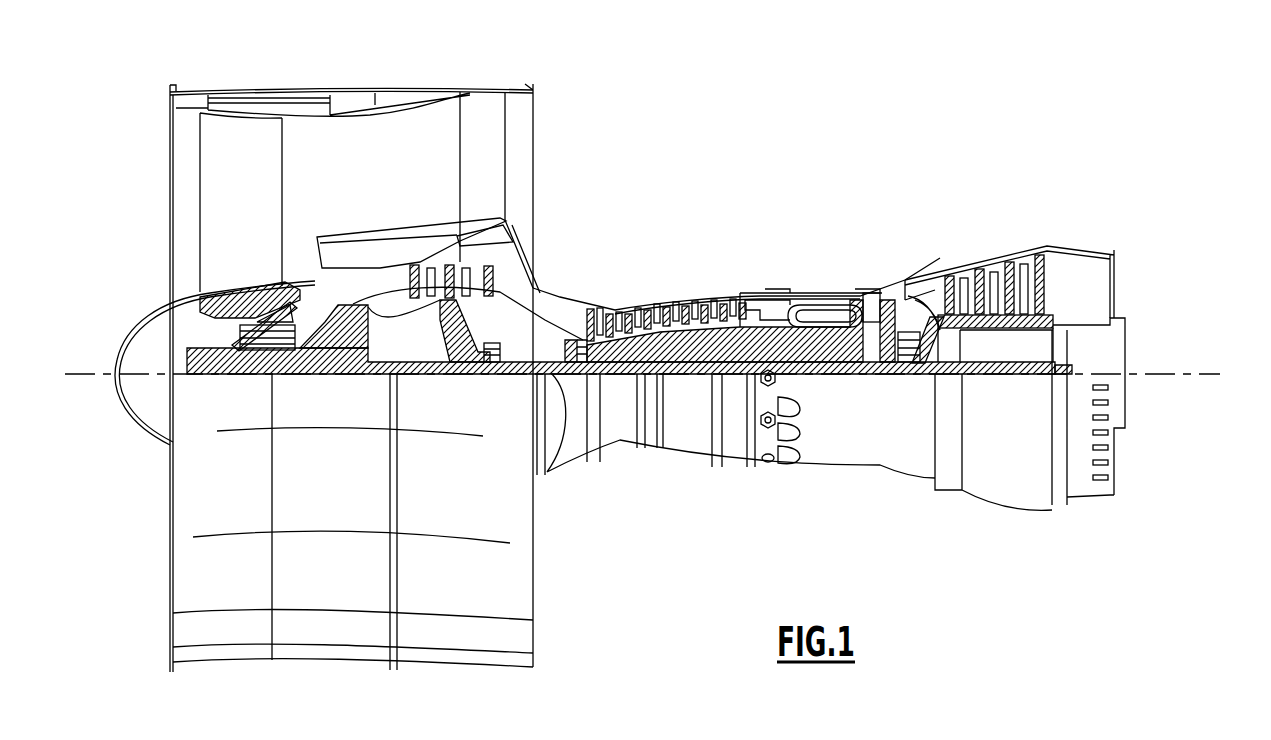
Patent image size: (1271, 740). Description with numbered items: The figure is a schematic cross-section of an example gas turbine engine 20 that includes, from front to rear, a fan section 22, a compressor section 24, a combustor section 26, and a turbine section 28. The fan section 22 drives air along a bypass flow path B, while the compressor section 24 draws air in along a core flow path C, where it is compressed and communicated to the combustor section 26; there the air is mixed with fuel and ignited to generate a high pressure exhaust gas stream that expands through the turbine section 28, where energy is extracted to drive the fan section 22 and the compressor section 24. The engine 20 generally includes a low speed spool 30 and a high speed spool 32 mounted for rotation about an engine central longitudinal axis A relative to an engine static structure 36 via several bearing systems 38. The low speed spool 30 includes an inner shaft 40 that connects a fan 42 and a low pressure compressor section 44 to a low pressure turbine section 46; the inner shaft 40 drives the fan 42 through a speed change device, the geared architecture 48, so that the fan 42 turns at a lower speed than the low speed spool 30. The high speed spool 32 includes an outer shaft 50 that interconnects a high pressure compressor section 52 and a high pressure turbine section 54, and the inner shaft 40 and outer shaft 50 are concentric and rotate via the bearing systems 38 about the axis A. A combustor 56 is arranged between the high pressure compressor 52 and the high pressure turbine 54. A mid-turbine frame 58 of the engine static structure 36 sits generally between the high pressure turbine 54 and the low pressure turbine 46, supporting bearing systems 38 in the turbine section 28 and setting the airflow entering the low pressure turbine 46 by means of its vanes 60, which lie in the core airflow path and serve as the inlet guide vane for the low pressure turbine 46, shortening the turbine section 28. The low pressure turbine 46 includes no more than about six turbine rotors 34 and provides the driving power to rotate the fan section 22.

The gas turbine engine 20 is at (818, 133).
The fan section 22 is at (280, 82).
The compressor section 24 is at (586, 273).
The combustor section 26 is at (805, 259).
The turbine section 28 is at (956, 223).
The low speed spool 30 is at (692, 389).
The high speed spool 32 is at (738, 328).
The turbine rotors 34 is at (1027, 333).
The engine static structure 36 is at (731, 470).
The bearing systems 38 is at (283, 368).
The inner shaft 40 is at (558, 374).
The fan 42 is at (255, 219).
The low pressure compressor section 44 is at (470, 238).
The low pressure turbine section 46 is at (1000, 255).
The geared architecture 48 is at (360, 357).
The outer shaft 50 is at (820, 372).
The high pressure compressor section 52 is at (660, 345).
The high pressure turbine section 54 is at (868, 295).
The combustor 56 is at (806, 315).
The mid-turbine frame 58 is at (922, 274).
The vanes 60 is at (912, 306).
The engine central longitudinal axis A is at (1200, 374).
The bypass flow path B is at (392, 165).
The core flow path C is at (352, 267).